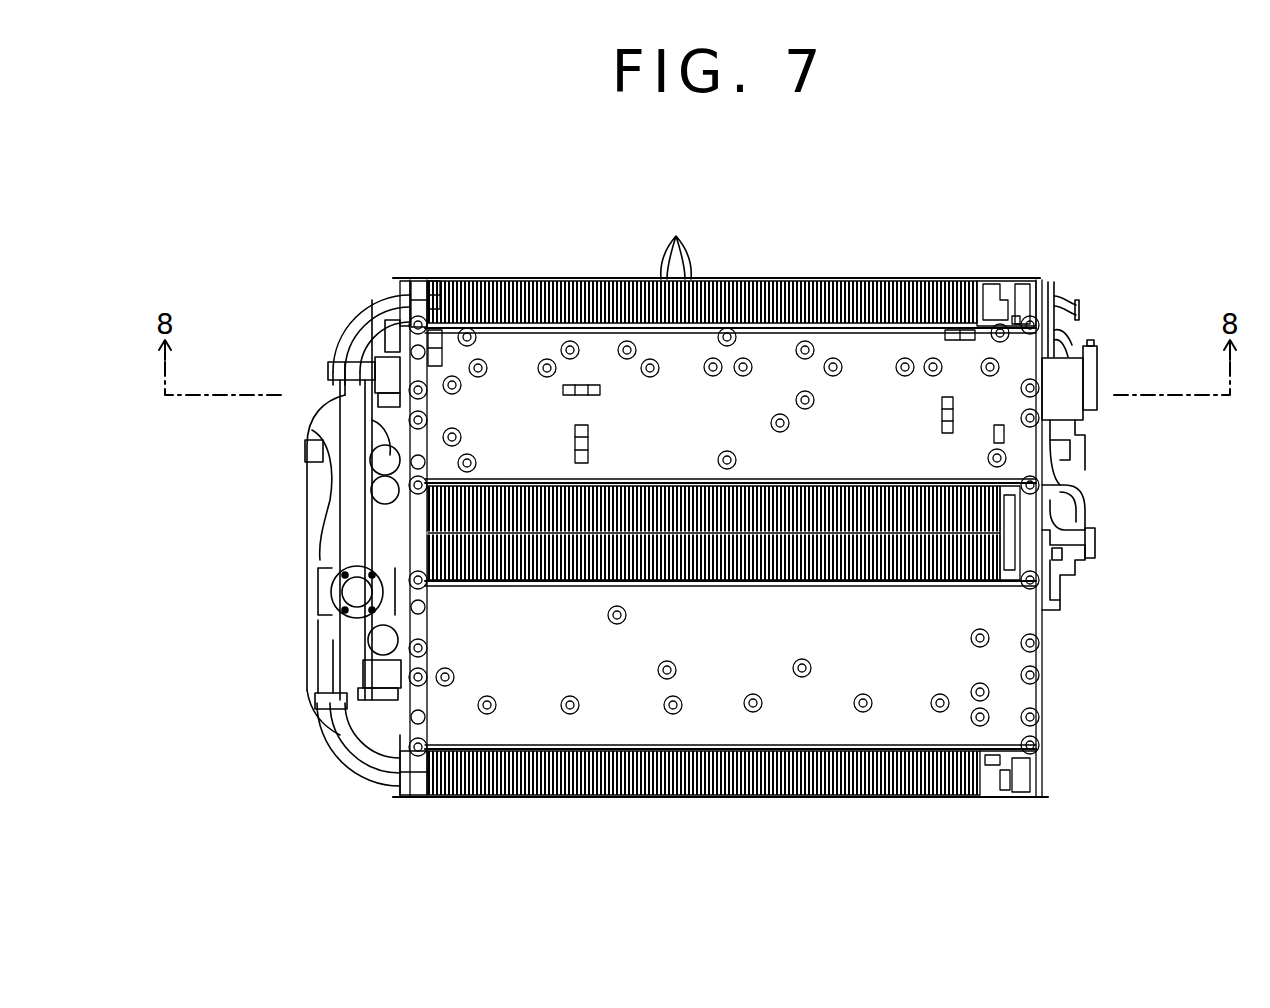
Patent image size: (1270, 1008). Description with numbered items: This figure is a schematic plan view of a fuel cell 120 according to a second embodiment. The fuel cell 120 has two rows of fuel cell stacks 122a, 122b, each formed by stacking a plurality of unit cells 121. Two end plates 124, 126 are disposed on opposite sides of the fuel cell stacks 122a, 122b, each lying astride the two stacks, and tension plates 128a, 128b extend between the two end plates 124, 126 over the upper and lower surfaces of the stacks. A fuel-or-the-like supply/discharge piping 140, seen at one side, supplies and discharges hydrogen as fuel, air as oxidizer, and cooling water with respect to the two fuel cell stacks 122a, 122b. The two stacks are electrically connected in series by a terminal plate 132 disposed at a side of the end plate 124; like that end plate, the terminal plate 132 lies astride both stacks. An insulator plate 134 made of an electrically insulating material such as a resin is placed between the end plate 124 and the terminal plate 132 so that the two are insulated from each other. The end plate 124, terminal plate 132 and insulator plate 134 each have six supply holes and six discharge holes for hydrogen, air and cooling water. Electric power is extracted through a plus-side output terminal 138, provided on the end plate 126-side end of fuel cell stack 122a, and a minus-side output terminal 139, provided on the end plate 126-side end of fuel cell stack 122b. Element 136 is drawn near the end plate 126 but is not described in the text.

The fuel cell 120 is at (1036, 207).
The unit cell 121 is at (668, 237).
The fuel cell stack 122a is at (789, 279).
The fuel cell stack 122b is at (783, 798).
The end plate 124 is at (414, 279).
The end plate 126 is at (1046, 280).
The tension plate 128a is at (600, 358).
The tension plate 128b is at (640, 717).
The terminal plate 132 is at (476, 279).
The insulator plate 134 is at (433, 279).
The end bracket 136 is at (972, 279).
The plus-side output terminal 138 is at (1050, 505).
The minus-side output terminal 139 is at (1072, 560).
The fuel-or-the-like supply/discharge piping 140 is at (327, 306).